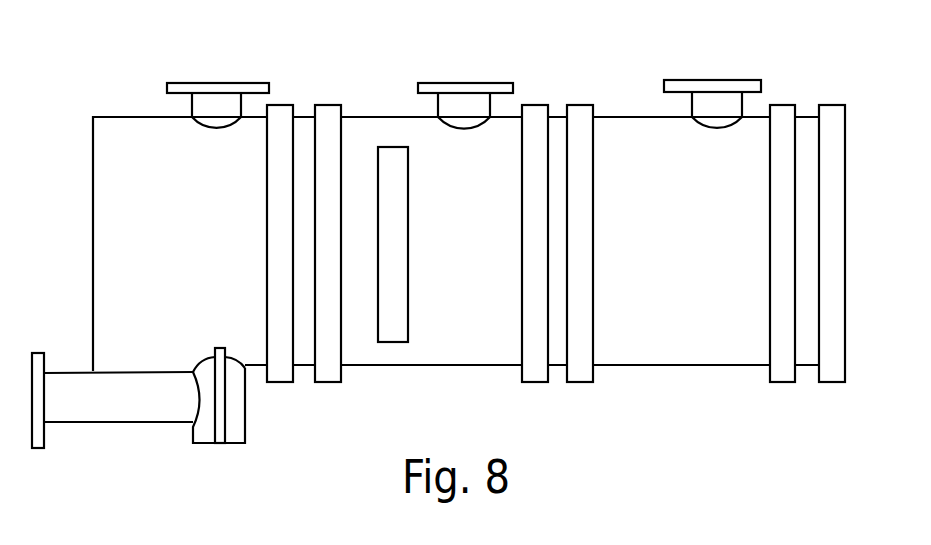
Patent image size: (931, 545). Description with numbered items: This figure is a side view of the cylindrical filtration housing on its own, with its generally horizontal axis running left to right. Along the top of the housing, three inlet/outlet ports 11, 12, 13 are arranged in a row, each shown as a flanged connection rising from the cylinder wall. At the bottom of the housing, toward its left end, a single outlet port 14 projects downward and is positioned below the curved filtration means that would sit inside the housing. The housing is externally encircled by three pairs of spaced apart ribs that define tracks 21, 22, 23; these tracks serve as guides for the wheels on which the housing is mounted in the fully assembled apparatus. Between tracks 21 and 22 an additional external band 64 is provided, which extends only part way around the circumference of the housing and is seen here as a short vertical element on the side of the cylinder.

The inlet/outlet port 11 is at (220, 97).
The inlet/outlet port 12 is at (462, 97).
The inlet/outlet port 13 is at (708, 95).
The outlet port 14 is at (233, 392).
The track 21 is at (302, 113).
The track 22 is at (555, 115).
The track 23 is at (805, 116).
The external band 64 is at (394, 313).